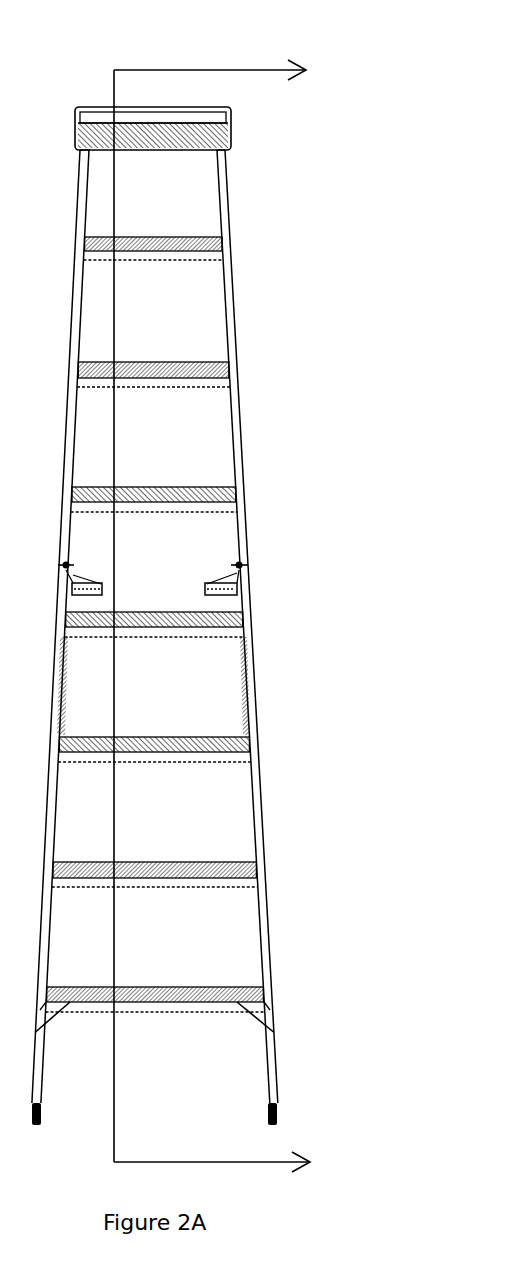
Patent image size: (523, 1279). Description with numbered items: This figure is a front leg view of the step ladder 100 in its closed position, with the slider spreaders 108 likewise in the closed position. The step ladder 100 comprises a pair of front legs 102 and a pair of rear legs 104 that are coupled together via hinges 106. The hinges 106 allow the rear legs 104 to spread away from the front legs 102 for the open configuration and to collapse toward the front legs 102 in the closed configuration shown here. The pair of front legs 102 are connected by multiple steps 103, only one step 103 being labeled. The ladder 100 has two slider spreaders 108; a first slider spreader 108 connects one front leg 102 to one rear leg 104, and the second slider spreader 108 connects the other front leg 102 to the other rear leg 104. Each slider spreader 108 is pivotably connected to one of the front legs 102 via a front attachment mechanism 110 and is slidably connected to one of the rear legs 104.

The step ladder 100 is at (78, 39).
The front legs 102 is at (42, 985).
The step 103 is at (228, 868).
The rear legs 104 is at (522, 1006).
The hinges 106 is at (72, 318).
The slider spreaders 108 is at (103, 578).
The front attachment mechanism 110 is at (67, 565).